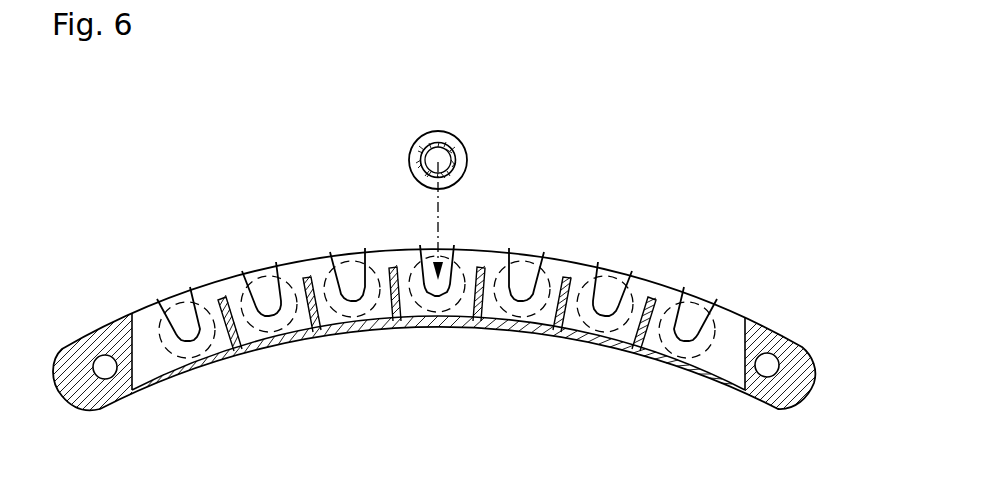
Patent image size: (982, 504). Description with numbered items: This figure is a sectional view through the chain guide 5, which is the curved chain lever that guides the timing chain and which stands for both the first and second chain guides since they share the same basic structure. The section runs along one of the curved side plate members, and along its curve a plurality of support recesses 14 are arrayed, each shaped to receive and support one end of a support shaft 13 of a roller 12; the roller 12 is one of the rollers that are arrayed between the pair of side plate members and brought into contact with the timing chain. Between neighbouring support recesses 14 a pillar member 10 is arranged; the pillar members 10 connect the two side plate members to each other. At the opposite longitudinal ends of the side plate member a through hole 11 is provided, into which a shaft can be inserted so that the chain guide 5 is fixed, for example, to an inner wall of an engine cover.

The chain guide 5 is at (642, 264).
The pillar member 10 is at (582, 284).
The through hole 11 is at (104, 365).
The roller 12 is at (482, 152).
The support shaft 13 is at (438, 158).
The support recess 14 is at (518, 262).